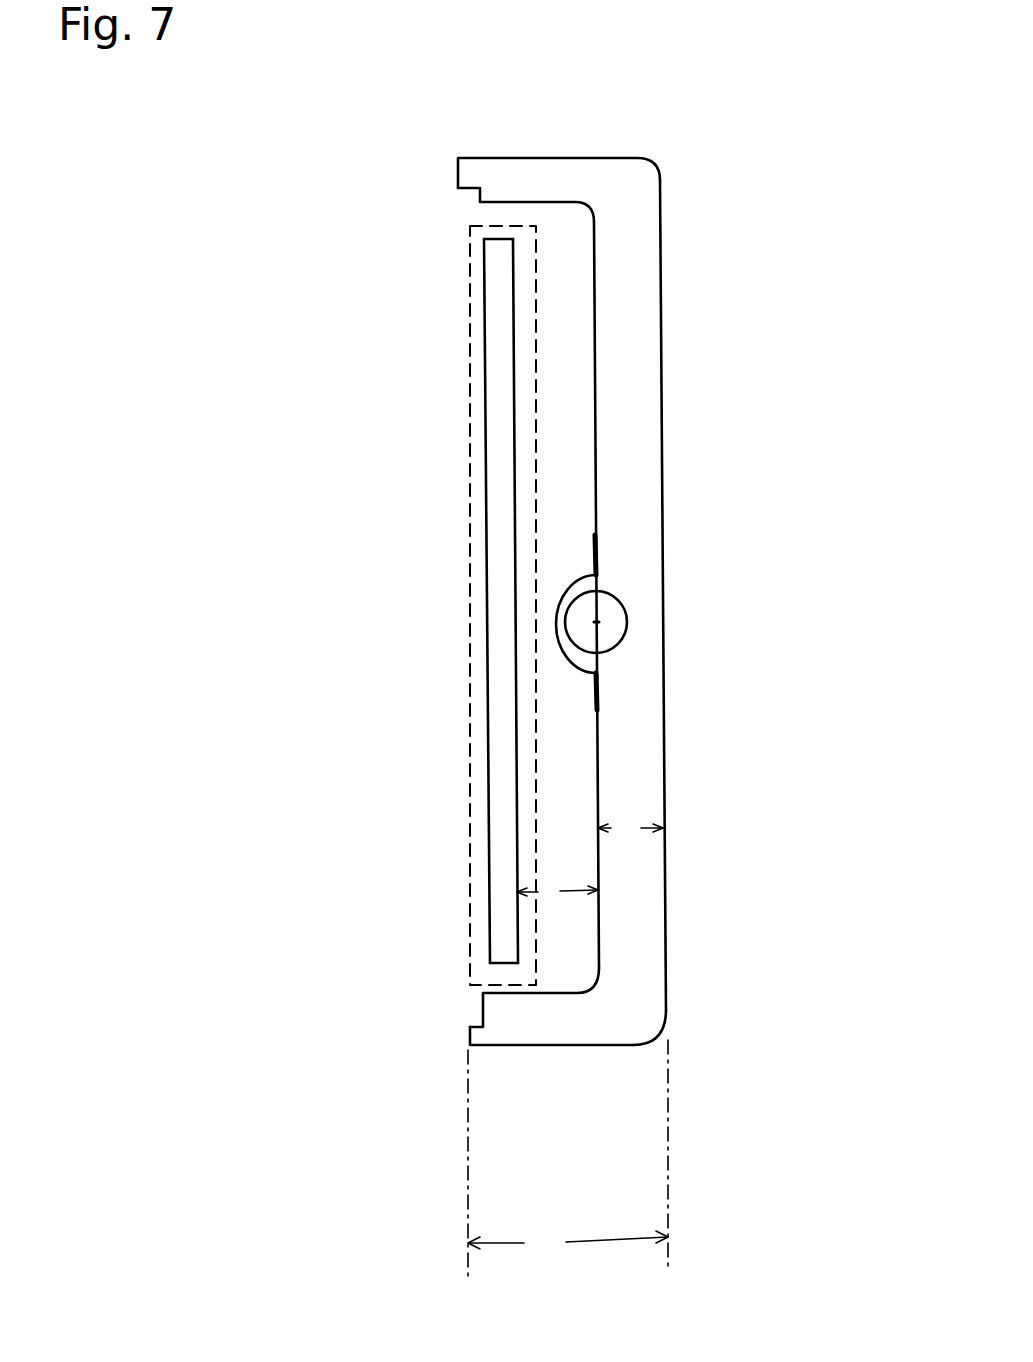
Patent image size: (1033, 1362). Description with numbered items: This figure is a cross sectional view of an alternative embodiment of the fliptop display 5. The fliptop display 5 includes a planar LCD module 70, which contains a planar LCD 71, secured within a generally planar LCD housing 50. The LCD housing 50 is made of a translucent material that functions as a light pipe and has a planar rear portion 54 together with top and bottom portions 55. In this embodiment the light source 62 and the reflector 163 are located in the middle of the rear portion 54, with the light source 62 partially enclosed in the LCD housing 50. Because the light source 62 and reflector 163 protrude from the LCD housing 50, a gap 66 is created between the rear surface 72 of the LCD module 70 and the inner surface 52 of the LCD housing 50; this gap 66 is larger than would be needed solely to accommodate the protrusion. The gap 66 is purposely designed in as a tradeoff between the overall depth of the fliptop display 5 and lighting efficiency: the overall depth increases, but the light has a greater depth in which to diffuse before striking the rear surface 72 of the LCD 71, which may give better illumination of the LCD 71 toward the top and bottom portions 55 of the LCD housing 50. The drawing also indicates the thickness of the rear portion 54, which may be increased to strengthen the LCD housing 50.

The fliptop display 5 is at (712, 96).
The LCD housing 50 is at (695, 230).
The inner surface 52 is at (600, 316).
The rear portion 54 is at (667, 450).
The top and bottom portions 55 is at (538, 145).
The light source 62 is at (632, 598).
The gap 66 is at (545, 800).
The LCD module 70 is at (468, 340).
The LCD 71 is at (498, 287).
The rear surface 72 is at (508, 402).
The reflector 163 is at (575, 565).